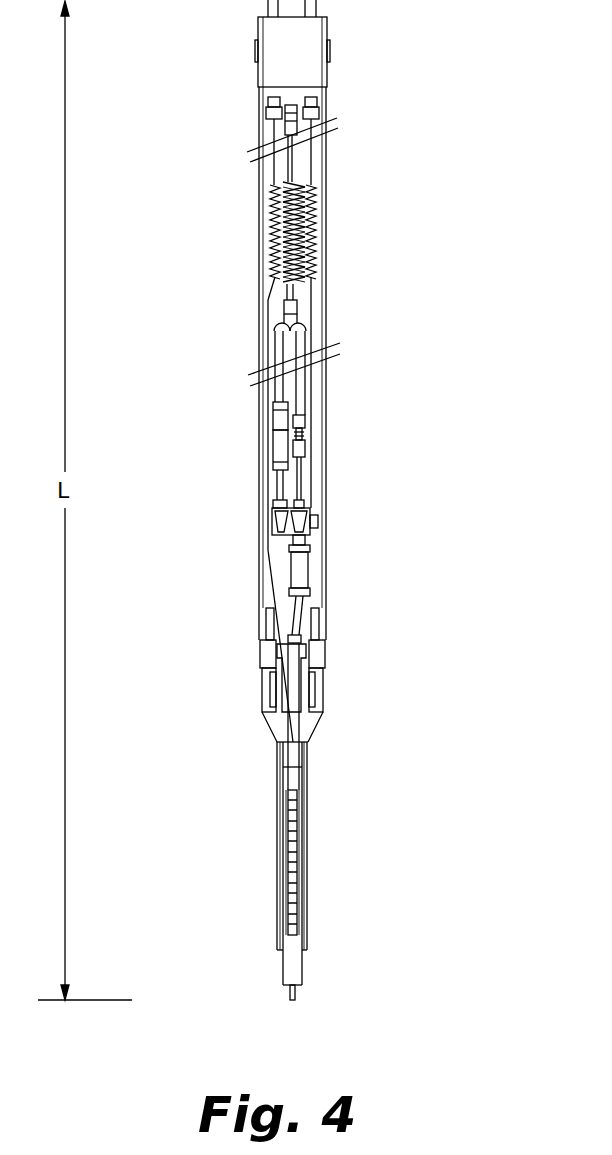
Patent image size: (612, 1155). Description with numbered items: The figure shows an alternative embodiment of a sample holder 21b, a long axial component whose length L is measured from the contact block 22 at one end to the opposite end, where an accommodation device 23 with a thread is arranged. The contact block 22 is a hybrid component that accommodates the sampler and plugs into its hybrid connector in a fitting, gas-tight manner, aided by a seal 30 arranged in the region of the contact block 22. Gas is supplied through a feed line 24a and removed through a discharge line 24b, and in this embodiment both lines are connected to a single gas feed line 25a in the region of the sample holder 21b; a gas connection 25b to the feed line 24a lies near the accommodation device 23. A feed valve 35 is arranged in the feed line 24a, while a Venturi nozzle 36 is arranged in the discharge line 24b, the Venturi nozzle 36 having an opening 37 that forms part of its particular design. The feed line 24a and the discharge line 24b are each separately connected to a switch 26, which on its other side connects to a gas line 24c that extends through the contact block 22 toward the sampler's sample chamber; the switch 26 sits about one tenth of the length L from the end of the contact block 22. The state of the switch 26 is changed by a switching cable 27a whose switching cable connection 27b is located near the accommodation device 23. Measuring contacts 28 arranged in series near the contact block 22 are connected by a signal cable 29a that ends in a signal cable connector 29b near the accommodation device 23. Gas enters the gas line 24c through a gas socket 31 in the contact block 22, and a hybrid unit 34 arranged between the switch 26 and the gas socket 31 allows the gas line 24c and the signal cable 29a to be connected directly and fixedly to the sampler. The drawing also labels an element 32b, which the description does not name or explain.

The sample holder 21b is at (350, 455).
The contact block 22 is at (280, 910).
The accommodation device 23 is at (305, 52).
The feed line 24a is at (304, 338).
The discharge line 24b is at (282, 355).
The gas line 24c is at (296, 614).
The gas feed line 25a is at (290, 164).
The gas connection 25b is at (285, 130).
The switch 26 is at (290, 527).
The switching cable 27a is at (317, 163).
The switching cable connection 27b is at (319, 111).
The measuring contacts 28 is at (288, 833).
The signal cable 29a is at (275, 242).
The signal cable connector 29b is at (266, 112).
The seal 30 is at (283, 947).
The gas socket 31 is at (290, 998).
The cylinder 32b is at (300, 574).
The hybrid unit 34 is at (298, 676).
The feed valve 35 is at (305, 433).
The Venturi nozzle 36 is at (278, 462).
The opening 37 is at (278, 431).